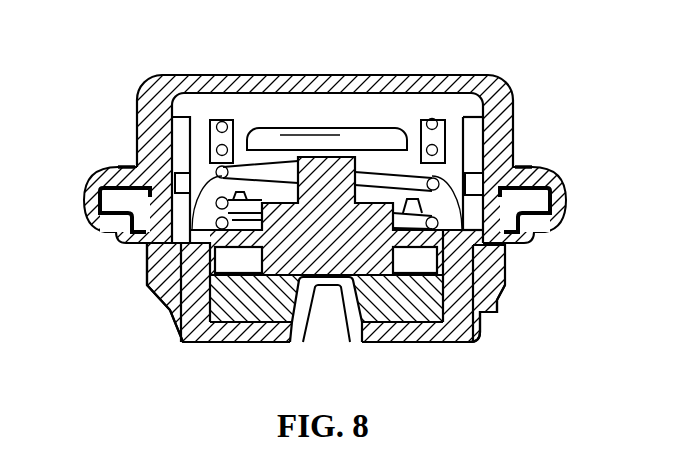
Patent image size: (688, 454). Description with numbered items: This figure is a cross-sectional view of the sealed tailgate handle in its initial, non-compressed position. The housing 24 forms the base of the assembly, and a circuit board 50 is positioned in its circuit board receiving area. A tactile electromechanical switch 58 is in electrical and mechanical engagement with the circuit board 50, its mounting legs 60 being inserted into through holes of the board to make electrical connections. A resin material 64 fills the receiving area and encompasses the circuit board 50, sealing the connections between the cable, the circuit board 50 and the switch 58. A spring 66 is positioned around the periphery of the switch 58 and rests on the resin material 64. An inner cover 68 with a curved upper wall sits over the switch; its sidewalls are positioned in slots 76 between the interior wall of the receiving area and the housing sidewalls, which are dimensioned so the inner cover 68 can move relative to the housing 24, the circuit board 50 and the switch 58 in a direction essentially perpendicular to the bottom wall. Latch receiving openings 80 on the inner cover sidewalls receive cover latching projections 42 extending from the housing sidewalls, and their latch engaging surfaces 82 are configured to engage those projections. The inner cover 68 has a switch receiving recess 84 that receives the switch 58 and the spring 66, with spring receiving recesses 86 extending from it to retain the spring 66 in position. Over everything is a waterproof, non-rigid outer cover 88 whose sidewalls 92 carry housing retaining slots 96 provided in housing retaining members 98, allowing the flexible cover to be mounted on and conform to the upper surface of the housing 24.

The housing 24 is at (445, 343).
The cover latching projections 42 is at (192, 172).
The circuit board 50 is at (376, 224).
The tactile electromechanical switch 58 is at (425, 222).
The mounting legs 60 is at (320, 163).
The resin material 64 is at (237, 320).
The spring 66 is at (185, 343).
The inner cover 68 is at (280, 102).
The slots 76 is at (475, 232).
The latch receiving openings 80 is at (150, 90).
The latch engaging surfaces 82 is at (147, 244).
The switch receiving recess 84 is at (168, 301).
The spring receiving recesses 86 is at (470, 112).
The outer cover 88 is at (505, 72).
The sidewalls 92 is at (135, 130).
The housing retaining slots 96 is at (548, 178).
The housing retaining members 98 is at (92, 215).